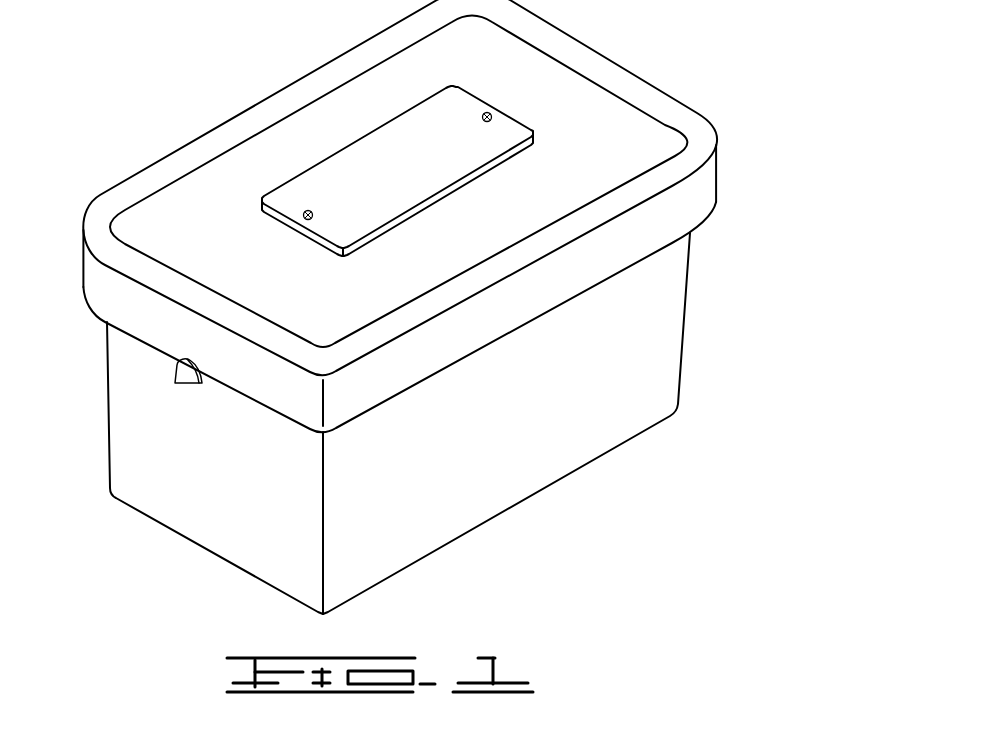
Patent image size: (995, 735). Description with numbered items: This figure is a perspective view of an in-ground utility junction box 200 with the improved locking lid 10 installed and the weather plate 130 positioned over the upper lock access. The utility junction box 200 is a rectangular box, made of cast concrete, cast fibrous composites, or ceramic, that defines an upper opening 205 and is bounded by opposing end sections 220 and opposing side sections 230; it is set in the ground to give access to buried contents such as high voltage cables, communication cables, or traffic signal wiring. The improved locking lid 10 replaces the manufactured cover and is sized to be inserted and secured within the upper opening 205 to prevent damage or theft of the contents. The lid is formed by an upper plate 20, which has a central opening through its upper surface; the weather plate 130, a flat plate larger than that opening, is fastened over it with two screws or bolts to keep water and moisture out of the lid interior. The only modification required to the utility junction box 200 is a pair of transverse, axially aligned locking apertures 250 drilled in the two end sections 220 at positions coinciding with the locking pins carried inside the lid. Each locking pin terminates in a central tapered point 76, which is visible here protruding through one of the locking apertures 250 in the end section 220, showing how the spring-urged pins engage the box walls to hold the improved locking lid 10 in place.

The improved locking lid 10 is at (553, 89).
The upper plate 20 is at (188, 208).
The weather plate 130 is at (364, 150).
The upper opening 205 is at (653, 112).
The utility junction box 200 is at (687, 318).
The end section 220 is at (190, 523).
The side section 230 is at (573, 442).
The central tapered point 76 is at (176, 379).
The locking aperture 250 is at (201, 388).